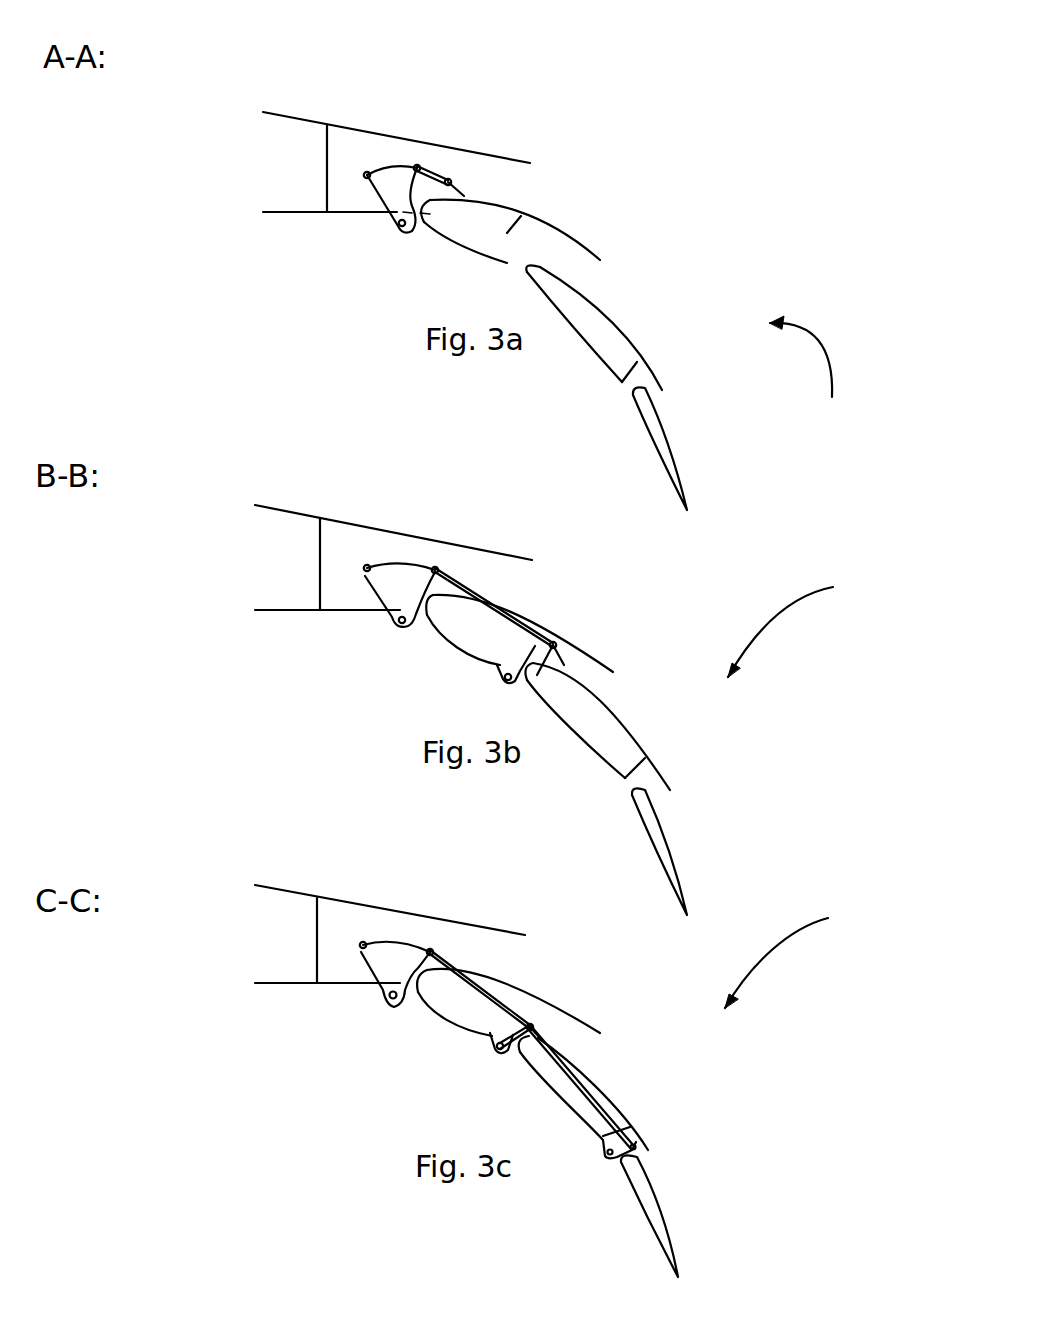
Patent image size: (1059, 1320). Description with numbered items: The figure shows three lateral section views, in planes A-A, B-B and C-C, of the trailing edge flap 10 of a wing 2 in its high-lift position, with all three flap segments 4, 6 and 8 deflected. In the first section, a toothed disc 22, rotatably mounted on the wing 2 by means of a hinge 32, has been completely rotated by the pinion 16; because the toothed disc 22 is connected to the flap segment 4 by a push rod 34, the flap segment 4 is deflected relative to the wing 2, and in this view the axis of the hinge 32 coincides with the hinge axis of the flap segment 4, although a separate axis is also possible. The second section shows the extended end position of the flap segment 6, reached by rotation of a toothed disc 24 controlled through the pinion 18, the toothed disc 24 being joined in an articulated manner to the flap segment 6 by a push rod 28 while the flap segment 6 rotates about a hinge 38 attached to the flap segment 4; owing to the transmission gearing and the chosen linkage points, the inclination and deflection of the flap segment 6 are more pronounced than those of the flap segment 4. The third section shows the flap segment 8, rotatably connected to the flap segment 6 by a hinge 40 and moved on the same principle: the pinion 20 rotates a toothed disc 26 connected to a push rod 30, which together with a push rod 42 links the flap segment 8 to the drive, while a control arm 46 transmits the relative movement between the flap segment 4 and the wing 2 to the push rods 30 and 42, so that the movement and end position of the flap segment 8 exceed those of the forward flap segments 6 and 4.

In FIG. 3A, the wing 2 is at (288, 177).
In FIG. 3B, the wing 2 is at (282, 578).
In FIG. 3C, the wing 2 is at (278, 965).
In FIG. 3A, the flap segment 4 is at (507, 263).
In FIG. 3B, the flap segment 4 is at (502, 637).
In FIG. 3C, the flap segment 4 is at (497, 1023).
In FIG. 3A, the flap segment 6 is at (613, 340).
In FIG. 3B, the flap segment 6 is at (607, 742).
In FIG. 3C, the flap segment 6 is at (577, 1068).
In FIG. 3A, the flap segment 8 is at (667, 433).
In FIG. 3B, the flap segment 8 is at (658, 837).
In FIG. 3C, the flap segment 8 is at (655, 1223).
In FIG. 3A, the trailing edge flap 10 is at (812, 375).
In FIG. 3B, the trailing edge flap 10 is at (802, 626).
In FIG. 3C, the trailing edge flap 10 is at (798, 958).
In FIG. 3A, the pinion 16 is at (367, 173).
In FIG. 3B, the pinion 18 is at (367, 567).
In FIG. 3C, the pinion 20 is at (363, 943).
In FIG. 3A, the toothed disc 22 is at (393, 188).
In FIG. 3B, the toothed disc 24 is at (390, 588).
In FIG. 3C, the toothed disc 26 is at (385, 972).
In FIG. 3B, the push rod 28 is at (440, 570).
In FIG. 3C, the push rod 30 is at (436, 955).
In FIG. 3A, the hinge 32 is at (401, 232).
In FIG. 3A, the push rod 34 is at (434, 190).
In FIG. 3B, the hinge 38 is at (510, 677).
In FIG. 3C, the hinge 40 is at (654, 1158).
In FIG. 3C, the push rod 42 is at (607, 1106).
In FIG. 3C, the control arm 46 is at (497, 1050).